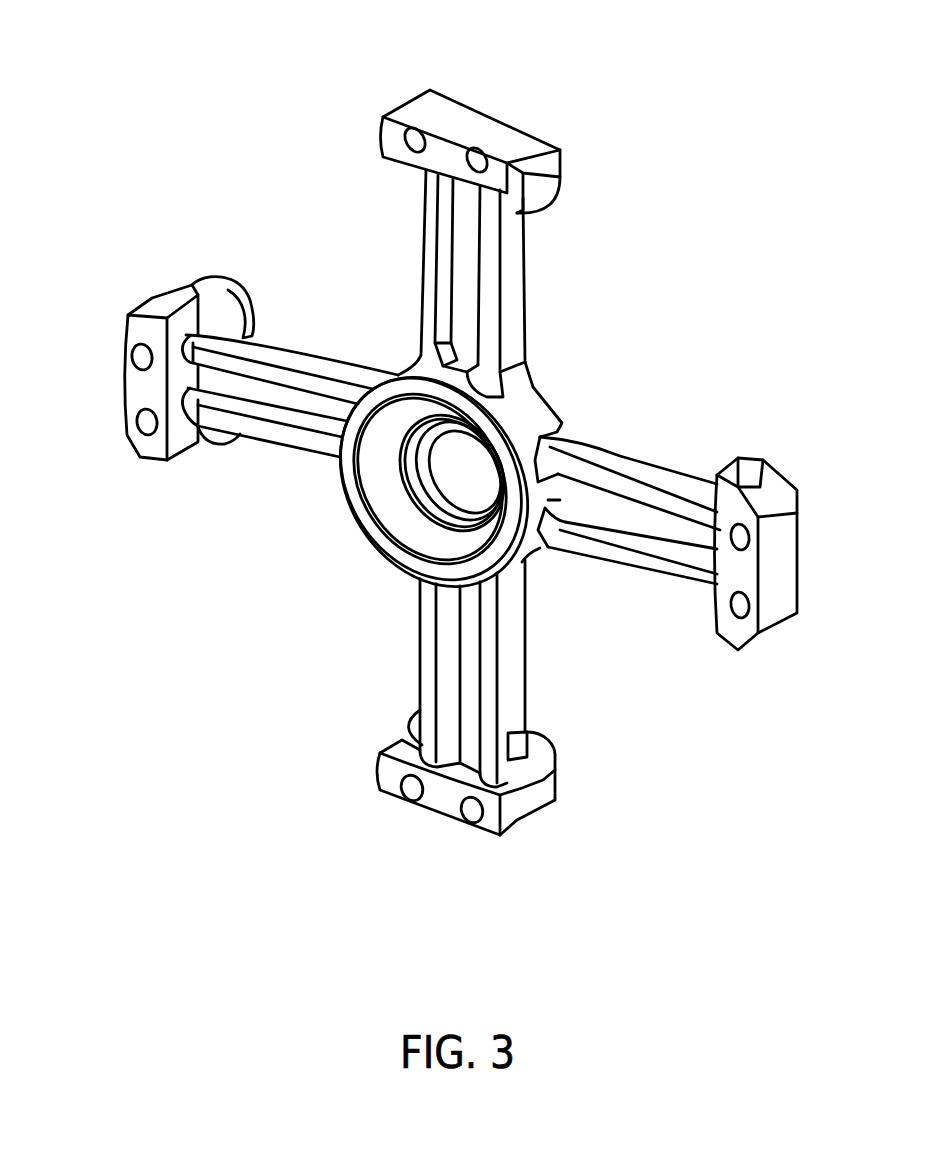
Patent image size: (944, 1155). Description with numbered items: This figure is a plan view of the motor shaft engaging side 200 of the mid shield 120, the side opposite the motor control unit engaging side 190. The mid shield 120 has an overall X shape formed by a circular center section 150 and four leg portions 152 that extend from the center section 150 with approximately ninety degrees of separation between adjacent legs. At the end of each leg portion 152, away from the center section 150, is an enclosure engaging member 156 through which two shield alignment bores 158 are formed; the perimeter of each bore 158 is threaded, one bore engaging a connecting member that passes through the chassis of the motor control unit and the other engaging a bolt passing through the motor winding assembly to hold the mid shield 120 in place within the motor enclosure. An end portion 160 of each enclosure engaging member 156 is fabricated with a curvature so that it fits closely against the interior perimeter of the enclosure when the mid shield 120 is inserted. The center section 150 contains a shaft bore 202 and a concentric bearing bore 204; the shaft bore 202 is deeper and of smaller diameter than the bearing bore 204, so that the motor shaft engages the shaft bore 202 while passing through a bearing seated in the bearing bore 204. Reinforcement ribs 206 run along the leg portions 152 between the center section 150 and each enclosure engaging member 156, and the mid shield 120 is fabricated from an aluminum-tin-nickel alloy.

The mid shield 120 is at (527, 270).
The center section 150 is at (535, 413).
The leg portion 152 is at (423, 237).
The enclosure engaging member 156 is at (540, 140).
The shield alignment bore 158 is at (402, 132).
The end portion 160 is at (494, 124).
The motor control unit engaging side 190 is at (545, 390).
The motor shaft engaging side 200 is at (283, 619).
The shaft bore 202 is at (470, 465).
The bearing bore 204 is at (423, 485).
The reinforcement rib 206 is at (428, 285).